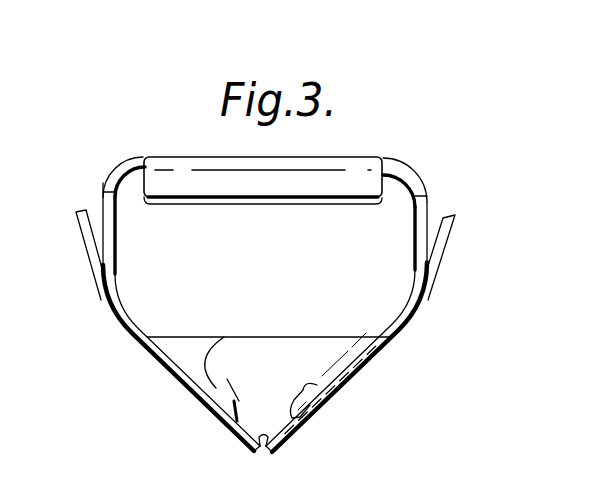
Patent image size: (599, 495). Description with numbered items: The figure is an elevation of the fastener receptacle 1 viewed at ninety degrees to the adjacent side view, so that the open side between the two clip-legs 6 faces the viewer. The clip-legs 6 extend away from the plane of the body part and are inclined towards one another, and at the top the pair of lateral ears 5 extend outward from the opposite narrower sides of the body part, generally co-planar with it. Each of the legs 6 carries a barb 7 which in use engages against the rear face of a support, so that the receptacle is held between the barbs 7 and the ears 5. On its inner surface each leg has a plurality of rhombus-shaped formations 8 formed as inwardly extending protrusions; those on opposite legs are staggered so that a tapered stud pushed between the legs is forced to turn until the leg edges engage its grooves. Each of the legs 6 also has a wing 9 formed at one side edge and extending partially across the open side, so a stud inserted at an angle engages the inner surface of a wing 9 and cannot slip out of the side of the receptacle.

The fastener receptacle 1 is at (106, 164).
The lateral ears 5 is at (333, 184).
The clip-legs 6 is at (393, 337).
The barb 7 is at (82, 233).
The rhombus-shaped formations 8 is at (228, 408).
The wing 9 is at (247, 373).